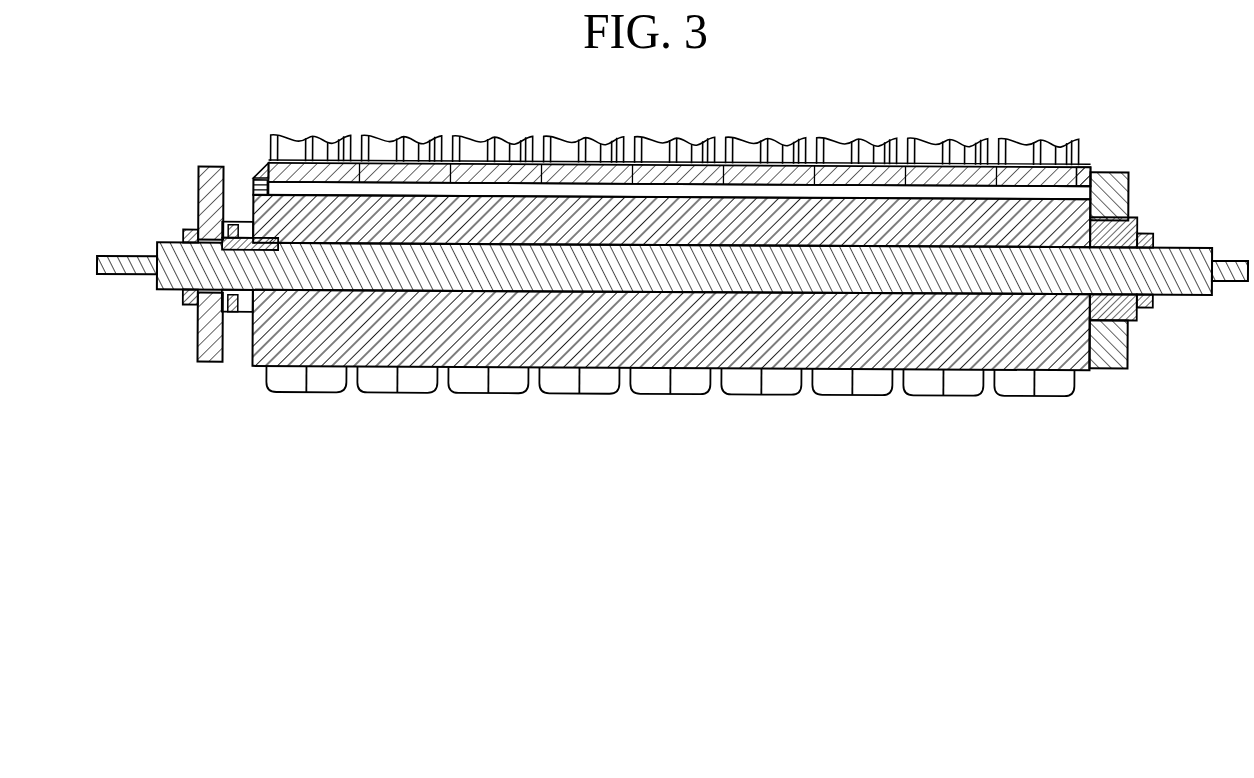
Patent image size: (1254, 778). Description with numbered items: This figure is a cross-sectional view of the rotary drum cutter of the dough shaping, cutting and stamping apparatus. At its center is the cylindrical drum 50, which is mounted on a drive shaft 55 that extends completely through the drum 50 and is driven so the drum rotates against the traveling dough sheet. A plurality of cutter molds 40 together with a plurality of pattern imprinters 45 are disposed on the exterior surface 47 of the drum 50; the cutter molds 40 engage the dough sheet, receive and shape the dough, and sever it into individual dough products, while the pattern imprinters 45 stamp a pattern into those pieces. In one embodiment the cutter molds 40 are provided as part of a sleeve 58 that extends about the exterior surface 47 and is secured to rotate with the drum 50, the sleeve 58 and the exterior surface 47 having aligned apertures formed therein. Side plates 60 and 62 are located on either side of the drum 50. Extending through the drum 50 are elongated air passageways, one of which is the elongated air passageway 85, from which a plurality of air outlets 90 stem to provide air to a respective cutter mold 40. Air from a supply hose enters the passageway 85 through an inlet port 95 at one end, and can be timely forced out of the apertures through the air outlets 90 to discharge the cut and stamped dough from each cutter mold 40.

The cutter mold 40 is at (272, 126).
The pattern imprinter 45 is at (312, 137).
The exterior surface 47 is at (1087, 370).
The cylindrical drum 50 is at (610, 358).
The drive shaft 55 is at (160, 247).
The sleeve 58 is at (1080, 161).
The side plate 60 is at (1127, 200).
The side plate 62 is at (198, 347).
The elongated air passageway 85 is at (1110, 176).
The air outlet 90 is at (255, 174).
The inlet port 95 is at (253, 190).